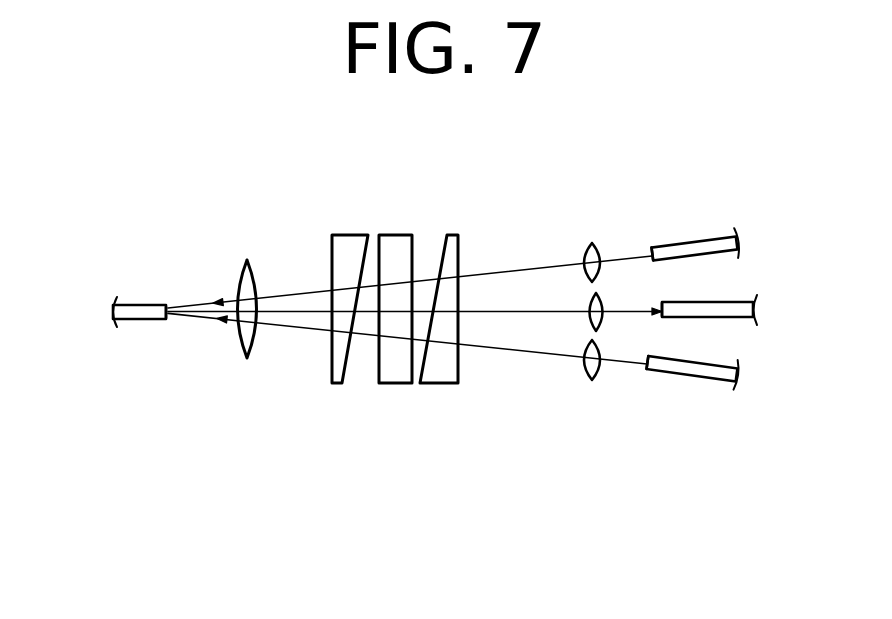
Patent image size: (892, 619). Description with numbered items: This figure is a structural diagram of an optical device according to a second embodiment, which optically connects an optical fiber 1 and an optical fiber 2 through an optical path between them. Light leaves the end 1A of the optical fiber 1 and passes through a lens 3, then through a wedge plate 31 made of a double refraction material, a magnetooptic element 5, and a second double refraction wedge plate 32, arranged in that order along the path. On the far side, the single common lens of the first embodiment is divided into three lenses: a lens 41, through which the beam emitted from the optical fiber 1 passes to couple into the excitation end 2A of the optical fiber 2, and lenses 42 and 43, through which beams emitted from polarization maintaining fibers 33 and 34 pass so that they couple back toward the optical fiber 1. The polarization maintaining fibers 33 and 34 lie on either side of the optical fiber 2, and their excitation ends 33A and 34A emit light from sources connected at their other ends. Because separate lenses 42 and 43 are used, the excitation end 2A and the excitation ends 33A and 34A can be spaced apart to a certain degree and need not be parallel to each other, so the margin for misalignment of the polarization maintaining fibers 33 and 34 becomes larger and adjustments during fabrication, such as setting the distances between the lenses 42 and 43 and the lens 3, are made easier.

The optical fiber 1 is at (133, 300).
The end of optical fiber 1A is at (170, 322).
The lens 3 is at (241, 358).
The wedge plate 31 is at (335, 385).
The magnetooptic element 5 is at (397, 385).
The wedge plate 32 is at (443, 385).
The lens 42 is at (586, 243).
The lens 41 is at (590, 318).
The lens 43 is at (586, 380).
The polarization maintaining fiber 33 is at (697, 241).
The excitation end 33A is at (645, 250).
The optical fiber 2 is at (738, 301).
The excitation end 2A is at (662, 318).
The polarization maintaining fiber 34 is at (688, 384).
The excitation end 34A is at (642, 367).